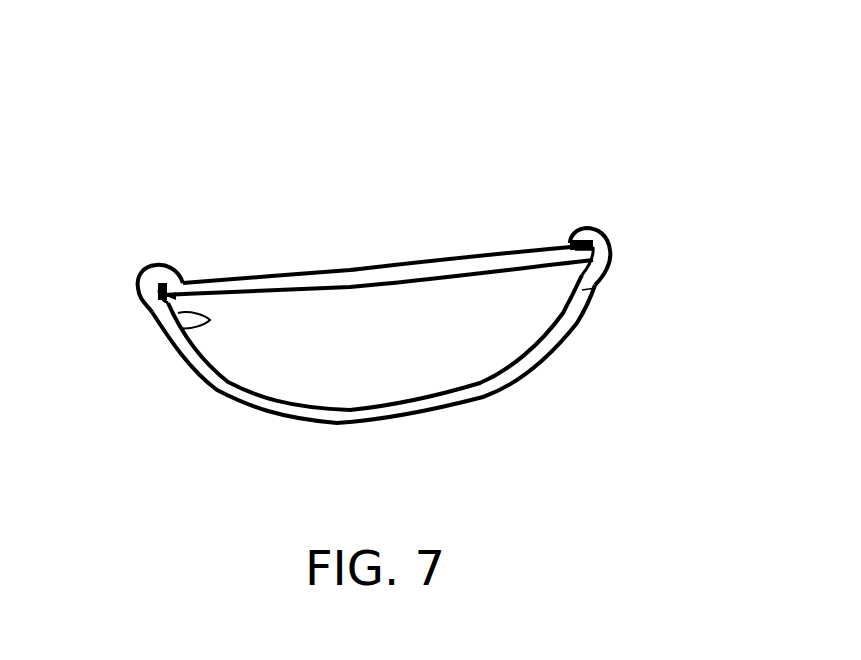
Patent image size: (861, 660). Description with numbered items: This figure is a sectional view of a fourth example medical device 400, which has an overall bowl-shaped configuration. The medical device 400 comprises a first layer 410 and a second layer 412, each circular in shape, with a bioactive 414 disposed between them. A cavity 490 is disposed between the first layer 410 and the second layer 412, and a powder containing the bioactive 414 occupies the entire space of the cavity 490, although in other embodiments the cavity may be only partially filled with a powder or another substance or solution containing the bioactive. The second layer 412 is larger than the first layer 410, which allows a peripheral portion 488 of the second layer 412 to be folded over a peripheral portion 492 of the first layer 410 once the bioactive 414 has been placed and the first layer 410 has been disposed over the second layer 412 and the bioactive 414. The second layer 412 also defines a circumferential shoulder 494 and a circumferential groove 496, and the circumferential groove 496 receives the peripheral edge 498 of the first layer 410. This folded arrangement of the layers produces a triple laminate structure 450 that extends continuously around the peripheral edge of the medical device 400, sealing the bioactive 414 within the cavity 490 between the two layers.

The medical device 400 is at (112, 162).
The first layer 410 is at (423, 272).
The second layer 412 is at (588, 290).
The bioactive 414 is at (345, 367).
The triple laminate structure 450 is at (133, 282).
The peripheral portion of the second layer 488 is at (588, 222).
The cavity 490 is at (458, 337).
The peripheral portion of the first layer 492 is at (587, 253).
The circumferential shoulder 494 is at (210, 320).
The circumferential groove 496 is at (185, 302).
The peripheral edge of the first layer 498 is at (178, 280).